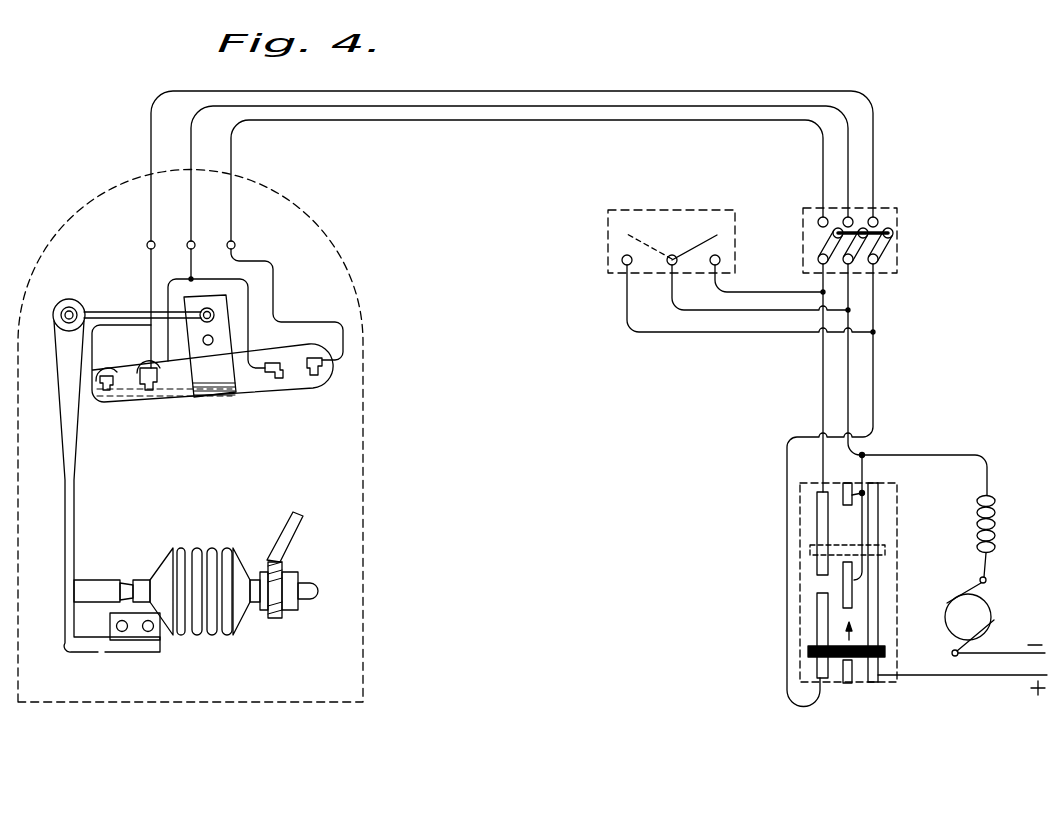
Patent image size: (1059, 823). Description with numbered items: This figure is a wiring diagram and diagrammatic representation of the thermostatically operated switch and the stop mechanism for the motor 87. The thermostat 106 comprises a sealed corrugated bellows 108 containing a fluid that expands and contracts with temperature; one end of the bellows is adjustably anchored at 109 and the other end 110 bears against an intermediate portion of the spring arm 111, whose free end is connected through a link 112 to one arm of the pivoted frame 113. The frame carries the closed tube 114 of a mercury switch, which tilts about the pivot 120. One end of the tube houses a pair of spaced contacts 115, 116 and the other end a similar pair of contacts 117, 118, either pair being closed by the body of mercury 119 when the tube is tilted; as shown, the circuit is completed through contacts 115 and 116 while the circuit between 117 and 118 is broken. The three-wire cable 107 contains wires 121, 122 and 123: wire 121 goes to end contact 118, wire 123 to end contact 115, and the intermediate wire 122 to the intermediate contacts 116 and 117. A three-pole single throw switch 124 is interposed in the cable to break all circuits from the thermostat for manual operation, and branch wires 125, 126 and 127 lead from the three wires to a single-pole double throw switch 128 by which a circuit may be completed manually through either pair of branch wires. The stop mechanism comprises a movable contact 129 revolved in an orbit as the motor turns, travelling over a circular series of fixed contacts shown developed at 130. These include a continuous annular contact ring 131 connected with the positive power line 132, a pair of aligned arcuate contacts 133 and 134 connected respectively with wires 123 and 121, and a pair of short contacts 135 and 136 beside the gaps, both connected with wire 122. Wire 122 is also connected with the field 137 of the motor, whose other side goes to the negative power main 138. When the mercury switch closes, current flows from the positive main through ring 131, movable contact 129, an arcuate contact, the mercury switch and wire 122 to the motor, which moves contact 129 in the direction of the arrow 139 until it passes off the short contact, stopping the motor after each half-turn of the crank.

The motor 87 is at (988, 617).
The thermostat 106 is at (369, 466).
The three-wire cable 107 is at (415, 84).
The sealed corrugated bellows 108 is at (223, 550).
The adjustable anchor 109 is at (327, 560).
The bellows end 110 is at (142, 565).
The spring arm 111 is at (73, 538).
The link 112 is at (117, 298).
The pivoted frame 113 is at (218, 295).
The closed tube 114 is at (256, 394).
The contact 115 is at (110, 378).
The contact 116 is at (163, 381).
The contact 117 is at (275, 380).
The contact 118 is at (317, 371).
The body of mercury 119 is at (132, 380).
The pivot 120 is at (208, 346).
The wire 121 is at (299, 122).
The intermediate wire 122 is at (345, 108).
The wire 123 is at (430, 94).
The three-pole single throw switch 124 is at (888, 243).
The branch wire 125 is at (776, 286).
The branch wire 126 is at (753, 312).
The branch wire 127 is at (652, 331).
The single-pole double throw switch 128 is at (675, 234).
The movable contact 129 is at (815, 652).
The fixed contacts 130 is at (887, 568).
The annular contact ring 131 is at (873, 530).
The positive power line 132 is at (977, 676).
The arcuate contact 133 is at (822, 623).
The arcuate contact 134 is at (818, 565).
The short contact 135 is at (843, 600).
The short contact 136 is at (843, 494).
The field 137 is at (990, 540).
The negative power main 138 is at (1010, 645).
The arrow 139 is at (852, 632).